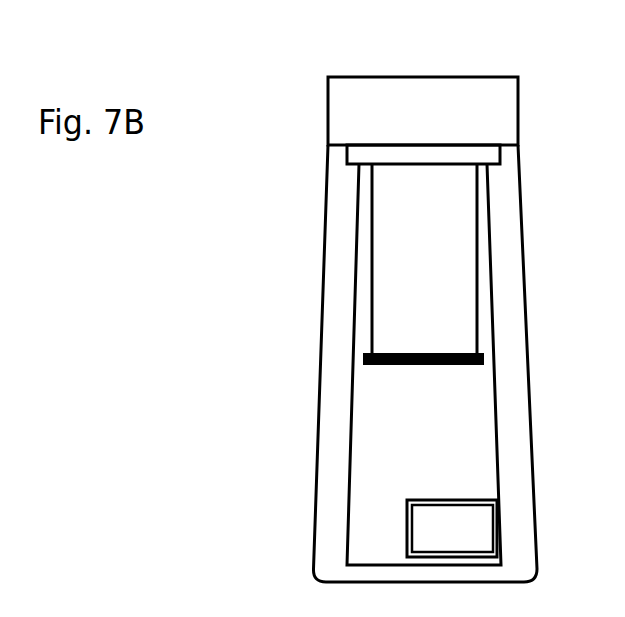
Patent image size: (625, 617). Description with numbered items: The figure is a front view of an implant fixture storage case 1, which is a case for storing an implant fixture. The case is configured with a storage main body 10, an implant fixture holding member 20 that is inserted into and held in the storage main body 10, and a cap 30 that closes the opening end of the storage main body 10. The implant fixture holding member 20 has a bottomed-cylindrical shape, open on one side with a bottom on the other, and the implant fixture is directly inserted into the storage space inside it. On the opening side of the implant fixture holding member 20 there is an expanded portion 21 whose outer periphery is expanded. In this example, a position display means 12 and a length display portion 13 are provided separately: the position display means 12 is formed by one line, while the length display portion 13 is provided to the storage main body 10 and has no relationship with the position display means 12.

The implant fixture storage case 1 is at (437, 48).
The storage main body 10 is at (258, 327).
The position display means 12 is at (442, 365).
The length display portion 13 is at (483, 520).
The implant fixture holding member 20 is at (387, 268).
The expanded portion 21 is at (360, 155).
The cap 30 is at (311, 71).